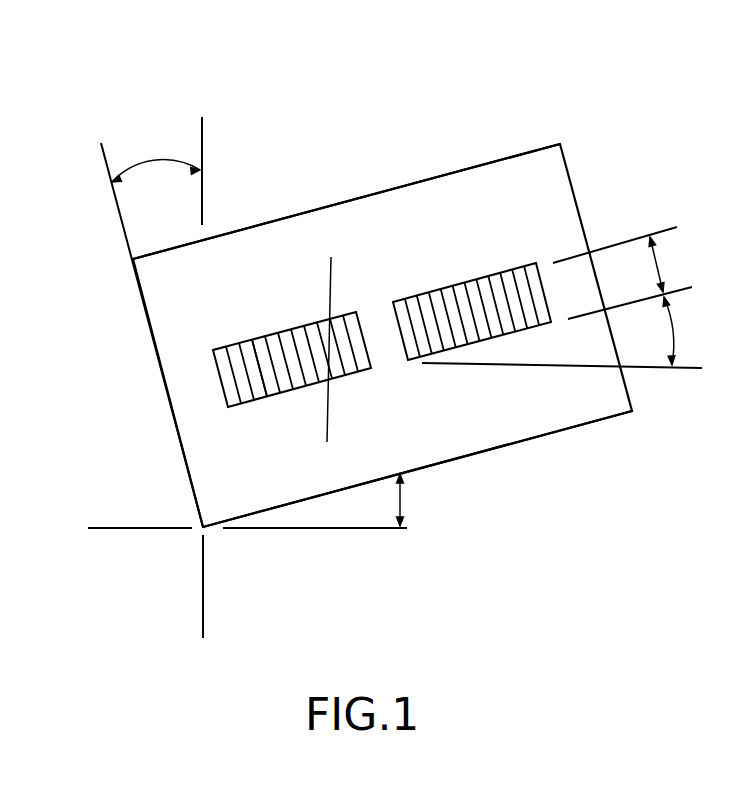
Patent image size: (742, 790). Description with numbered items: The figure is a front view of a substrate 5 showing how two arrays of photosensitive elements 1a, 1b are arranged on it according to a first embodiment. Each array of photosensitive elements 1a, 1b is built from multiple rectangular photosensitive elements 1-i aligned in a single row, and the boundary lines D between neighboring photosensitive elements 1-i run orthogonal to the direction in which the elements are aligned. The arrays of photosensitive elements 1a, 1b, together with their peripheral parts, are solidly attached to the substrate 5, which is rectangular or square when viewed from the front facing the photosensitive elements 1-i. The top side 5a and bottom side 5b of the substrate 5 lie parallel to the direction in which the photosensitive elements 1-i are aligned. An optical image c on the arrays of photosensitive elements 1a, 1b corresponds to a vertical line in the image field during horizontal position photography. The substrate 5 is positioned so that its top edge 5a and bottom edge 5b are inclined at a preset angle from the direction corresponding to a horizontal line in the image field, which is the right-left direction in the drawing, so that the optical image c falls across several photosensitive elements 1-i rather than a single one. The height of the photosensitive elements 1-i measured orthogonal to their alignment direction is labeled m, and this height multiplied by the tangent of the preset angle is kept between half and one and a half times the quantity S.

The substrate 5 is at (517, 160).
The top side 5a is at (318, 208).
The bottom side 5b is at (537, 440).
The array of photosensitive elements 1a is at (233, 397).
The array of photosensitive elements 1b is at (427, 300).
The photosensitive element 1-i is at (257, 345).
The optical image c is at (328, 293).
The boundary line D is at (235, 350).
The height of photosensitive elements m is at (628, 273).